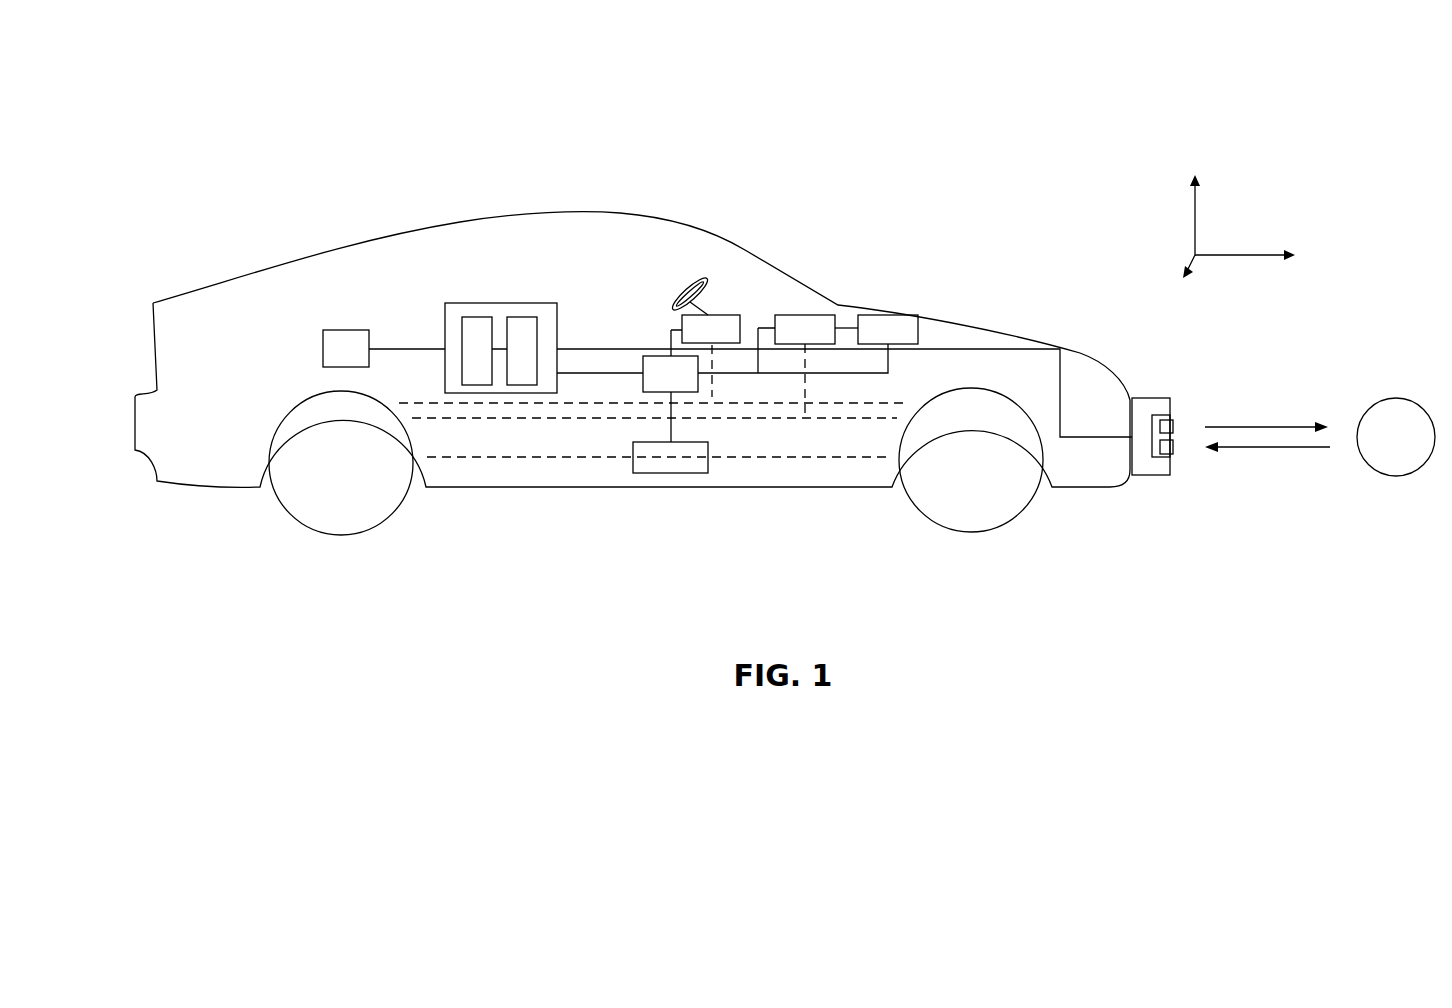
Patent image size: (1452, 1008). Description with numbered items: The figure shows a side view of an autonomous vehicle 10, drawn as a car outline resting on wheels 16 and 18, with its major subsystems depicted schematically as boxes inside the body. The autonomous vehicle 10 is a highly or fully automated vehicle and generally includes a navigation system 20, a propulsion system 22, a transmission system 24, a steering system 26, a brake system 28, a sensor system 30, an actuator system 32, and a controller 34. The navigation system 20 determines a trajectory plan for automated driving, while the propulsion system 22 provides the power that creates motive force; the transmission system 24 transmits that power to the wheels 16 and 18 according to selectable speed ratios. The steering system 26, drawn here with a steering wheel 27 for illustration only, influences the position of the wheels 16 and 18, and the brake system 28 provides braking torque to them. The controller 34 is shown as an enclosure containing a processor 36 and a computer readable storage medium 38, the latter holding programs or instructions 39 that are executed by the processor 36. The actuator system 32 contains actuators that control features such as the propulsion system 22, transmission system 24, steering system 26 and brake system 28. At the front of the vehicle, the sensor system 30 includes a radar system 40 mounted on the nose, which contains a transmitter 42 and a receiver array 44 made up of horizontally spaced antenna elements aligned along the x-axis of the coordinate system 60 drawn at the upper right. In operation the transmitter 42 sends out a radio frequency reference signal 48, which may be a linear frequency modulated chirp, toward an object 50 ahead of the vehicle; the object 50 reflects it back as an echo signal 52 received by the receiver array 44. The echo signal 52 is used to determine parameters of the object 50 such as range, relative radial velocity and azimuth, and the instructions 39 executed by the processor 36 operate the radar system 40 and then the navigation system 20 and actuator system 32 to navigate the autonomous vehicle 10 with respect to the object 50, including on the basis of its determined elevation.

The autonomous vehicle 10 is at (687, 158).
The wheel 16 is at (340, 537).
The wheel 18 is at (970, 533).
The navigation system 20 is at (345, 330).
The propulsion system 22 is at (886, 315).
The transmission system 24 is at (805, 315).
The steering system 26 is at (722, 315).
The steering wheel 27 is at (687, 285).
The brake system 28 is at (670, 473).
The sensor system 30 is at (1137, 372).
The actuator system 32 is at (653, 392).
The controller 34 is at (500, 303).
The processor 36 is at (478, 317).
The computer readable storage medium 38 is at (522, 317).
The programs or instructions 39 is at (522, 387).
The radar system 40 is at (1158, 463).
The transmitter 42 is at (1176, 427).
The receiver array 44 is at (1176, 448).
The reference signal 48 is at (1265, 427).
The object 50 is at (1397, 398).
The reflected echo signal 52 is at (1265, 448).
The coordinate system 60 is at (1286, 163).